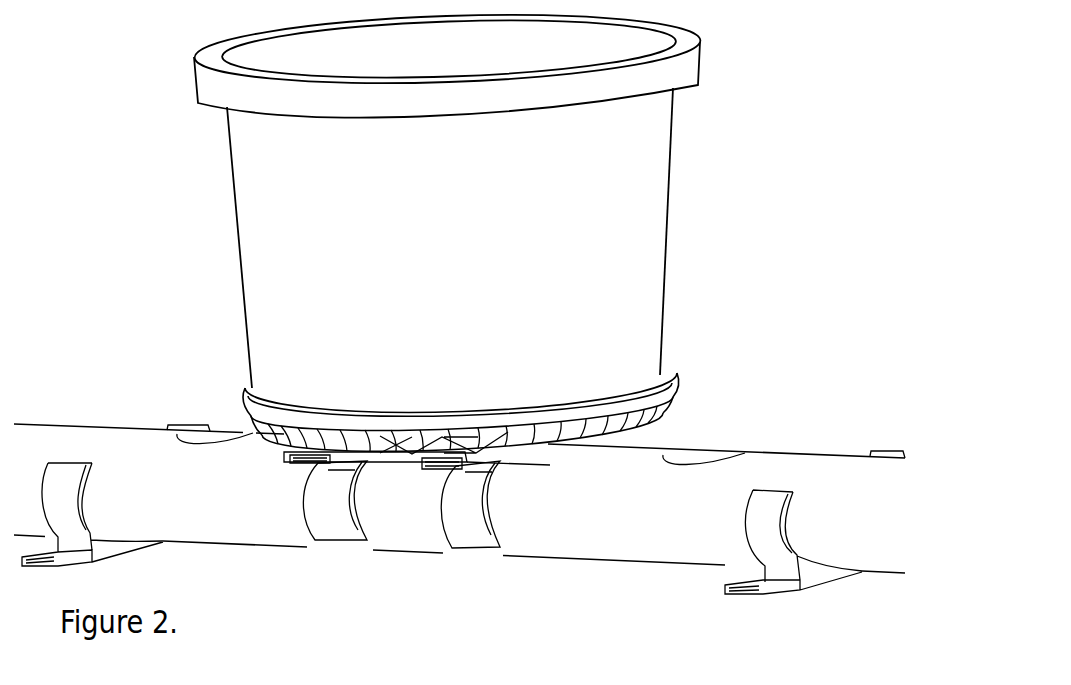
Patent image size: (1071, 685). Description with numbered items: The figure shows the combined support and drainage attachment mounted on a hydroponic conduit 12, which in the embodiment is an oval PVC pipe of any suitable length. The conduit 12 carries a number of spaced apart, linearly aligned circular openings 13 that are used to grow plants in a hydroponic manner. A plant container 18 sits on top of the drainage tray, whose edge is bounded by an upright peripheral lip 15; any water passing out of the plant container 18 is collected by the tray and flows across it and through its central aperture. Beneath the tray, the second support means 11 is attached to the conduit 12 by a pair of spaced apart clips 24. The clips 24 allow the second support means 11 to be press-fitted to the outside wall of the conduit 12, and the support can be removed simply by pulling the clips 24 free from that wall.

The plant container 18 is at (236, 188).
The upright peripheral lip 15 is at (243, 383).
The second support means 11 is at (404, 460).
The hydroponic conduit 12 is at (126, 465).
The circular openings 13 is at (720, 451).
The clips 24 is at (332, 520).